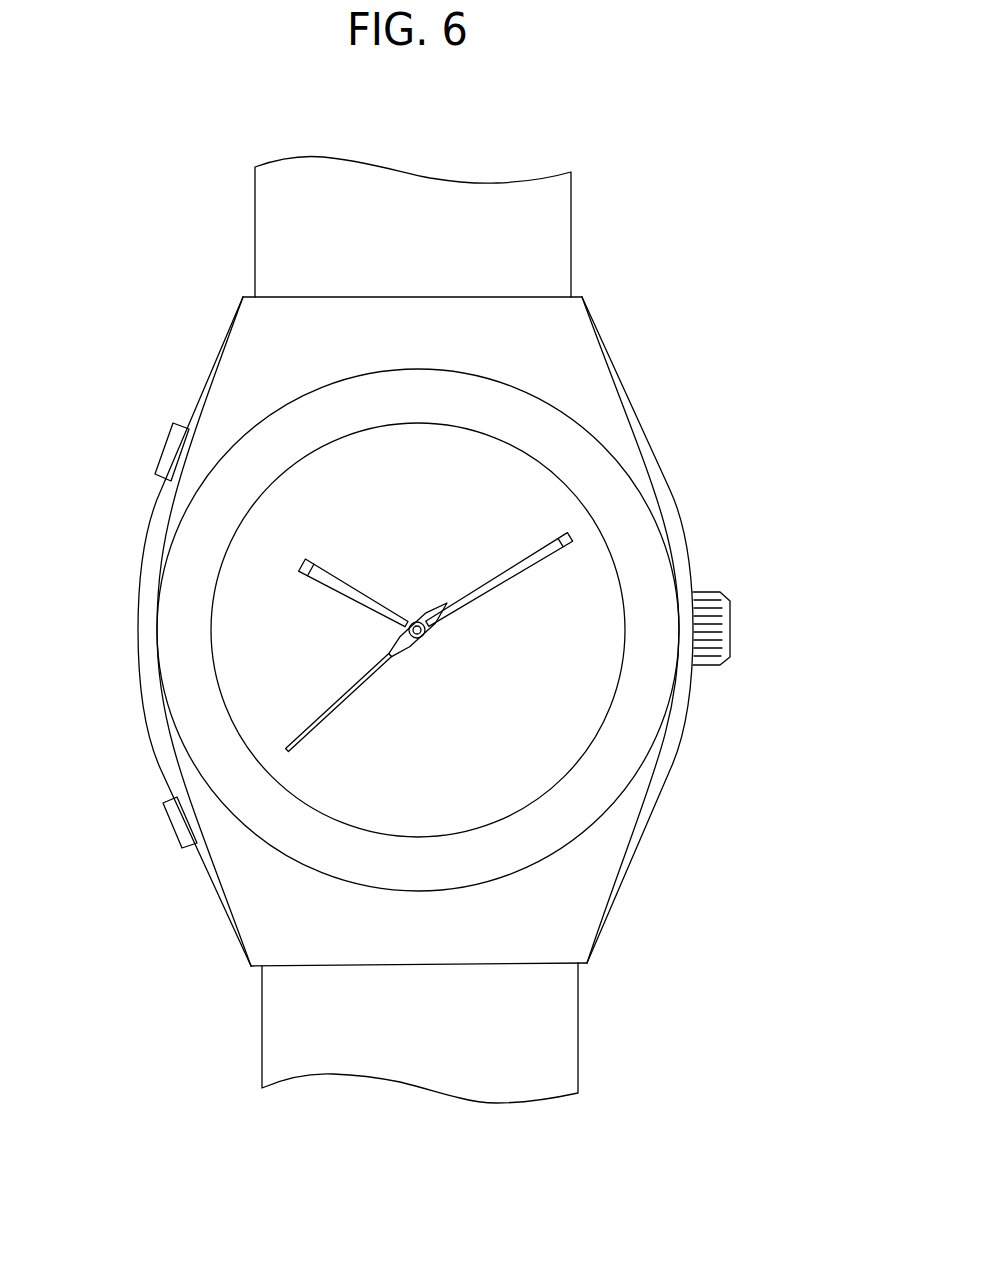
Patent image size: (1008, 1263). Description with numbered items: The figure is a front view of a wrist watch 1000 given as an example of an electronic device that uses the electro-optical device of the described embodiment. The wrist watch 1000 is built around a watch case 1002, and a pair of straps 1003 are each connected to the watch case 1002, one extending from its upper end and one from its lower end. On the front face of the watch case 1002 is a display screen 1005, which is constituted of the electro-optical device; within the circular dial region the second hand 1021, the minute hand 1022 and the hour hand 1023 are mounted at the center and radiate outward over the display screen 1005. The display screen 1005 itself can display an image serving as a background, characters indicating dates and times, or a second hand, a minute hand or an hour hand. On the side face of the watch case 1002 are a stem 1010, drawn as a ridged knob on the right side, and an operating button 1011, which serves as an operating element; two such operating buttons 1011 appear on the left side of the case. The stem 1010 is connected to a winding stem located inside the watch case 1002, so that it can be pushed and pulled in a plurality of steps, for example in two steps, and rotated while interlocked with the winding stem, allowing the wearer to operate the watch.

The wrist watch 1000 is at (738, 262).
The watch case 1002 is at (623, 387).
The straps 1003 is at (556, 234).
The display screen 1005 is at (587, 588).
The stem 1010 is at (720, 632).
The operating button 1011 is at (170, 450).
The second hand 1021 is at (287, 746).
The minute hand 1022 is at (572, 536).
The hour hand 1023 is at (298, 563).